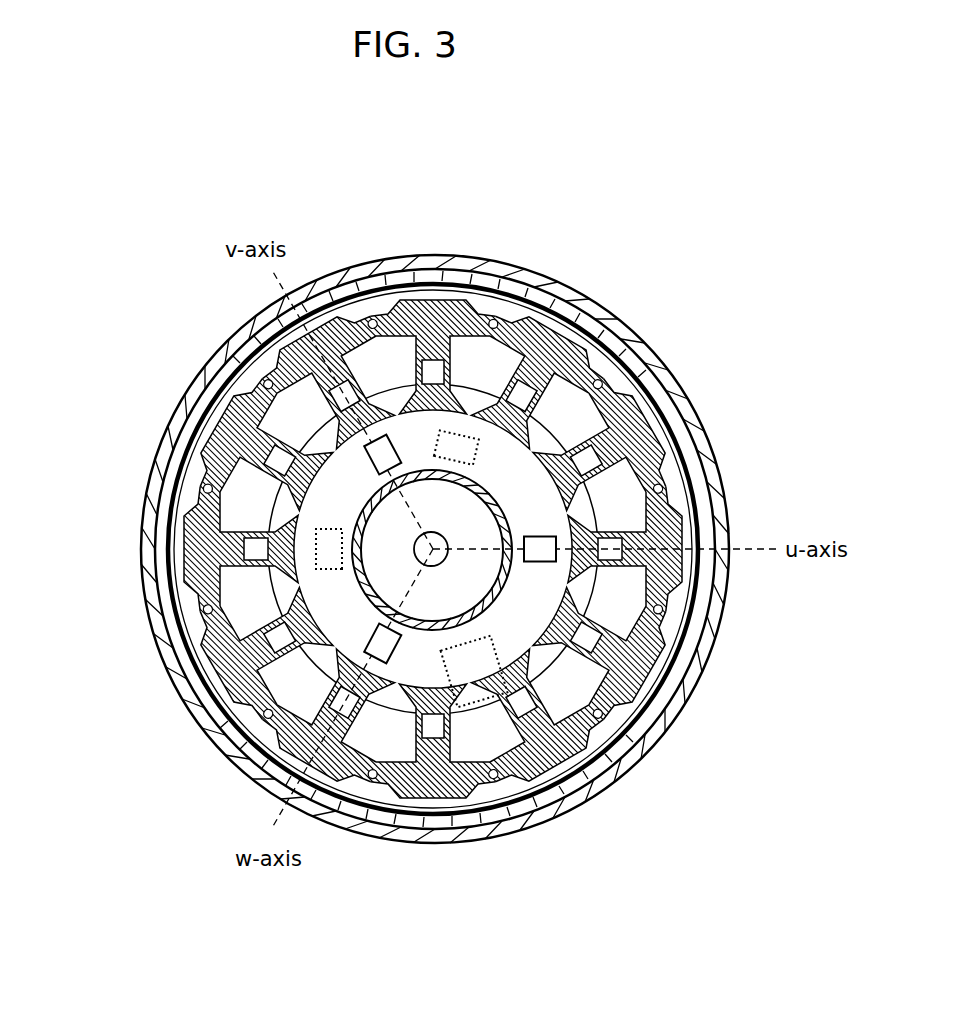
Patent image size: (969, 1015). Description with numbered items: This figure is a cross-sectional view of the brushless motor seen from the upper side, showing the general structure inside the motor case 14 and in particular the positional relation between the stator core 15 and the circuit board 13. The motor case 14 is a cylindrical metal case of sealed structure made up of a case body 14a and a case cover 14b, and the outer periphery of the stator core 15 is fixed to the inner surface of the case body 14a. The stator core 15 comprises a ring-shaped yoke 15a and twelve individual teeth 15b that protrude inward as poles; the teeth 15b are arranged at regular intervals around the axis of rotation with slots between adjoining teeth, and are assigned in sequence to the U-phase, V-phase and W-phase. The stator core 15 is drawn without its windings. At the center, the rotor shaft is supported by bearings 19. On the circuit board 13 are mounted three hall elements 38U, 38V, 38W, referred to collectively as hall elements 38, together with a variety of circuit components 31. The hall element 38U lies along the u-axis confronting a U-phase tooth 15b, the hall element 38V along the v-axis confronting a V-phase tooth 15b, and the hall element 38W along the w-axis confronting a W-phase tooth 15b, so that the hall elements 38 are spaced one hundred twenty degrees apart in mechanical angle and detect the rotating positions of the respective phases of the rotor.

The circuit board 13 is at (543, 440).
The motor case 14 is at (446, 519).
The case body 14a is at (542, 275).
The case cover 14b is at (604, 316).
The stator core 15 is at (348, 549).
The yoke 15a is at (206, 505).
The teeth 15b is at (200, 462).
The bearings 19 is at (458, 575).
The circuit components 31 is at (485, 655).
The hall elements 38 is at (483, 516).
The U-phase hall element 38U is at (558, 546).
The V-phase hall element 38V is at (378, 443).
The W-phase hall element 38W is at (374, 655).